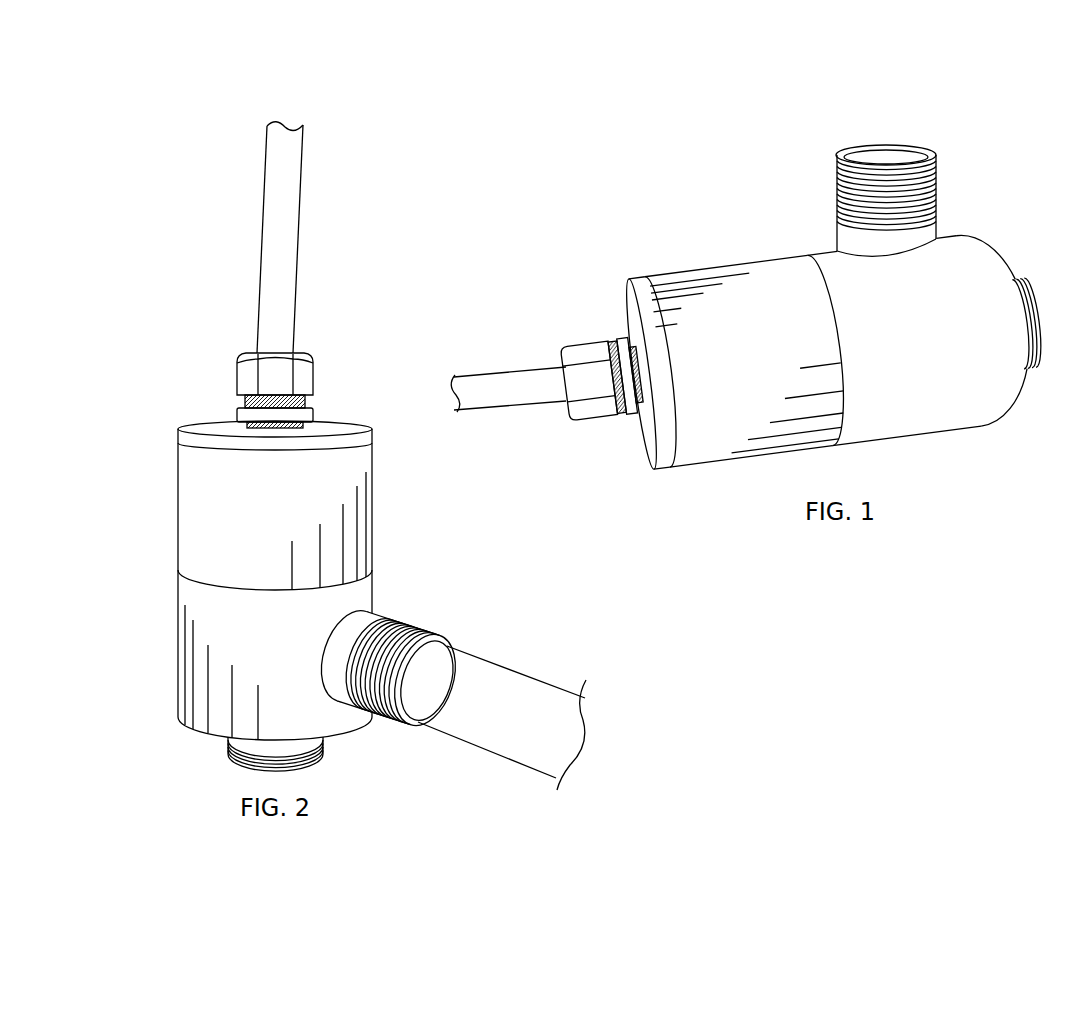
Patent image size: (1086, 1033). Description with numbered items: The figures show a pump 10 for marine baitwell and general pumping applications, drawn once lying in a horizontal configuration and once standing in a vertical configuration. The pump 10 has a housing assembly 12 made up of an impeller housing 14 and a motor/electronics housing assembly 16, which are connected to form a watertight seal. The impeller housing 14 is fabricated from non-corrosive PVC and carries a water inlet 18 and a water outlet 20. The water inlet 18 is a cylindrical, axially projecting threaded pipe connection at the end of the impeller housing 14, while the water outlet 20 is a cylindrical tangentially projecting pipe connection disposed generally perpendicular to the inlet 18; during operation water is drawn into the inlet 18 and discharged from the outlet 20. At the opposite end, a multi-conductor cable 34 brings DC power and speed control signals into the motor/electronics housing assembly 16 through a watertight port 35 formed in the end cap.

In FIG. 1, the pump 10 is at (698, 186).
In FIG. 2, the pump 10 is at (172, 363).
In FIG. 1, the housing assembly 12 is at (814, 238).
In FIG. 2, the housing assembly 12 is at (158, 556).
In FIG. 1, the impeller housing 14 is at (947, 432).
In FIG. 2, the impeller housing 14 is at (178, 670).
In FIG. 1, the motor/electronics housing assembly 16 is at (727, 463).
In FIG. 2, the motor/electronics housing assembly 16 is at (178, 478).
In FIG. 1, the water inlet 18 is at (1031, 362).
In FIG. 2, the water inlet 18 is at (230, 756).
In FIG. 1, the water outlet 20 is at (937, 170).
In FIG. 2, the water outlet 20 is at (418, 628).
In FIG. 1, the multi-conductor cable 34 is at (538, 375).
In FIG. 2, the multi-conductor cable 34 is at (258, 300).
In FIG. 1, the watertight port 35 is at (594, 421).
In FIG. 2, the watertight port 35 is at (315, 380).